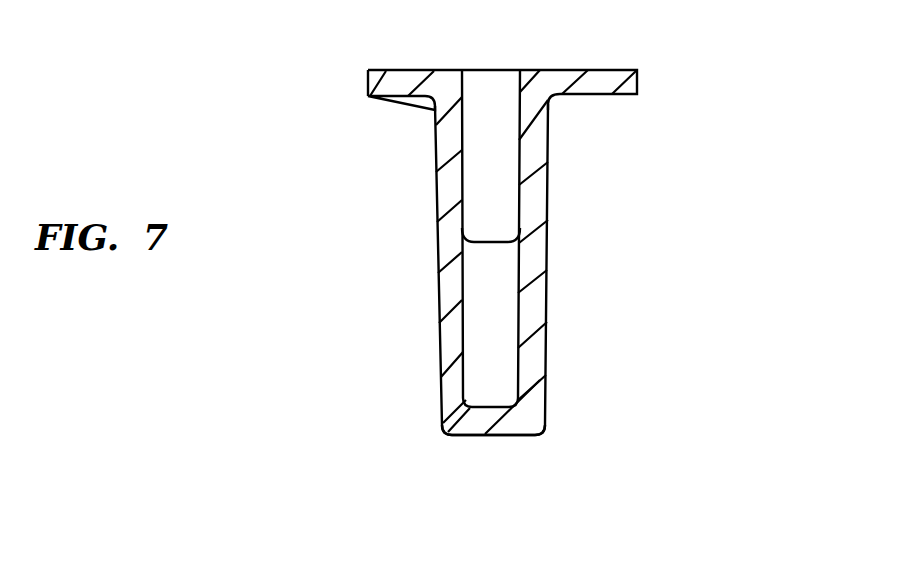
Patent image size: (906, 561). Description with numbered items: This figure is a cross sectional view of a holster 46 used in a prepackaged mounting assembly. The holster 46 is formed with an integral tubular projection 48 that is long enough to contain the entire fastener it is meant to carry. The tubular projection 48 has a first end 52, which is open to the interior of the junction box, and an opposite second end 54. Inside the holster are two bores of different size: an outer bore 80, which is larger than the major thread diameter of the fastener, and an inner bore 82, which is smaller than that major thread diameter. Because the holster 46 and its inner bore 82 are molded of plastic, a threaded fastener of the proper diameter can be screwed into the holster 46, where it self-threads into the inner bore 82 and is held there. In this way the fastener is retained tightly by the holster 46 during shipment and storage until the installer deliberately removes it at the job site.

The holster 46 is at (548, 261).
The integral tubular projection 48 is at (437, 288).
The first end 52 is at (467, 71).
The second end 54 is at (487, 435).
The outer bore 80 is at (462, 157).
The inner bore 82 is at (463, 295).